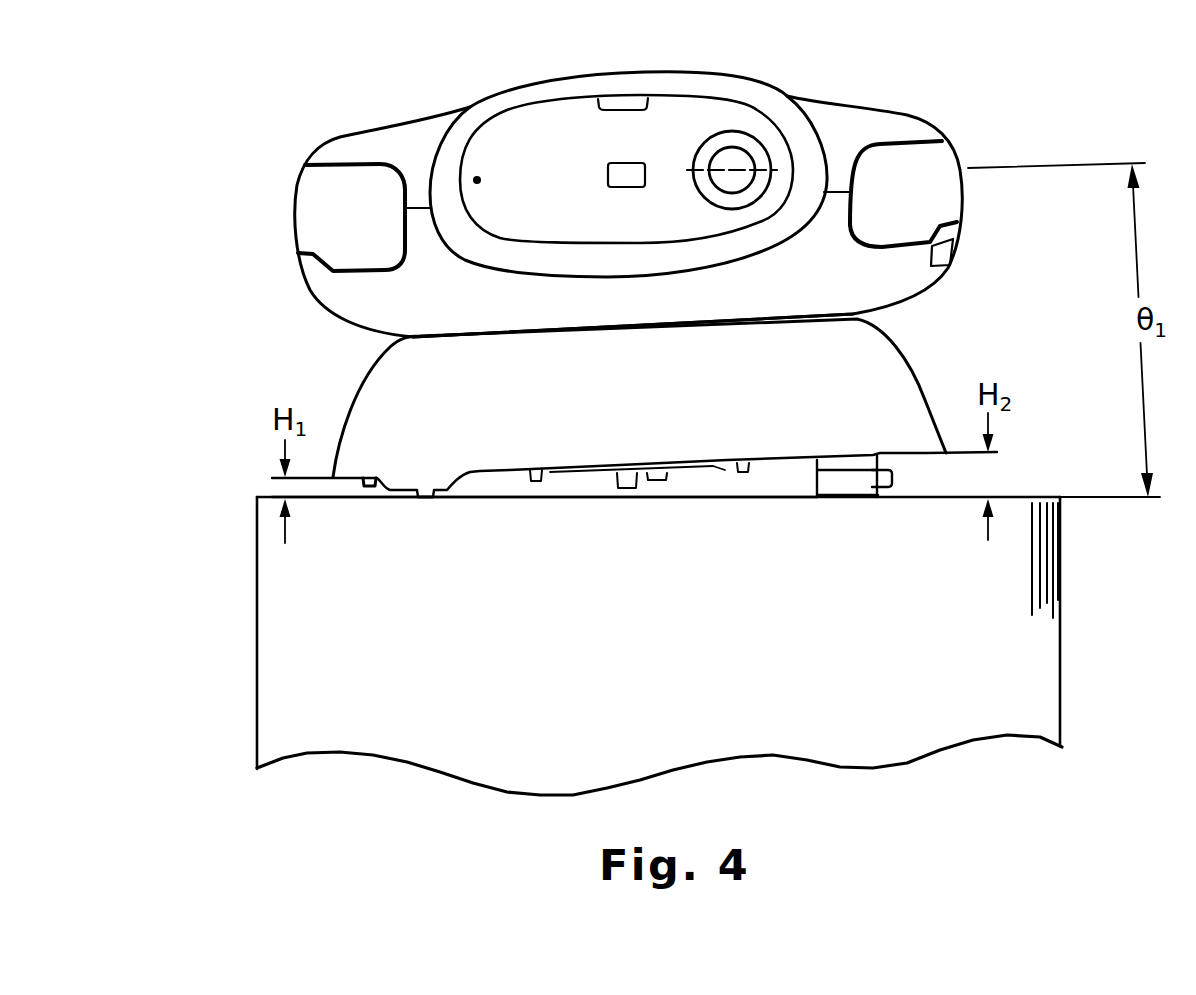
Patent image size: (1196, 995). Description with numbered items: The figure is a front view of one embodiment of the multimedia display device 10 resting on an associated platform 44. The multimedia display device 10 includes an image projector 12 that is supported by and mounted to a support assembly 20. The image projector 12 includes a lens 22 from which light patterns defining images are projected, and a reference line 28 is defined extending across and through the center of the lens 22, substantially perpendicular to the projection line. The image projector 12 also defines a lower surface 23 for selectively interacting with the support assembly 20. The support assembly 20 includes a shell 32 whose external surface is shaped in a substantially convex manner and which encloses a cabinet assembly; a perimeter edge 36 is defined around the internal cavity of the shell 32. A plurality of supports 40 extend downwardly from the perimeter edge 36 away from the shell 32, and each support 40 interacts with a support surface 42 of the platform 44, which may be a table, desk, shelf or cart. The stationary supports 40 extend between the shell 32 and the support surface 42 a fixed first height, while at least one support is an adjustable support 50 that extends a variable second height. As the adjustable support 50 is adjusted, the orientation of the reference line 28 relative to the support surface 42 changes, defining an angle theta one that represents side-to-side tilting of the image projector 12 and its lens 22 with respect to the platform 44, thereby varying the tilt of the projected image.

The multimedia display device 10 is at (1016, 56).
The image projector 12 is at (903, 97).
The support assembly 20 is at (352, 361).
The lens 22 is at (735, 160).
The lower surface 23 is at (843, 296).
The reference line 28 is at (687, 168).
The shell 32 is at (883, 368).
The perimeter edge 36 is at (930, 455).
The support 40 is at (398, 483).
The support surface 42 is at (267, 497).
The platform 44 is at (292, 678).
The adjustable support 50 is at (859, 514).